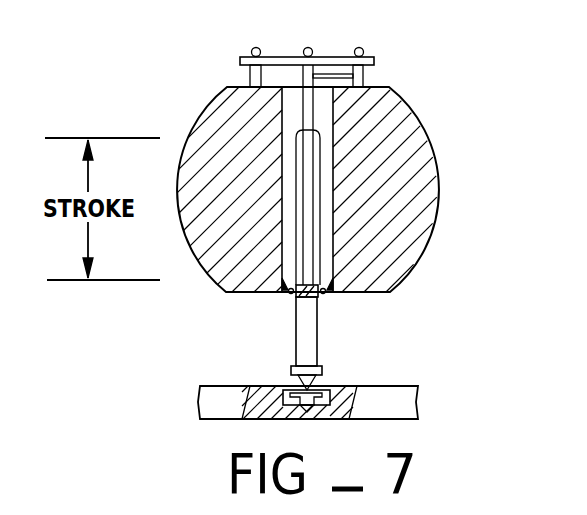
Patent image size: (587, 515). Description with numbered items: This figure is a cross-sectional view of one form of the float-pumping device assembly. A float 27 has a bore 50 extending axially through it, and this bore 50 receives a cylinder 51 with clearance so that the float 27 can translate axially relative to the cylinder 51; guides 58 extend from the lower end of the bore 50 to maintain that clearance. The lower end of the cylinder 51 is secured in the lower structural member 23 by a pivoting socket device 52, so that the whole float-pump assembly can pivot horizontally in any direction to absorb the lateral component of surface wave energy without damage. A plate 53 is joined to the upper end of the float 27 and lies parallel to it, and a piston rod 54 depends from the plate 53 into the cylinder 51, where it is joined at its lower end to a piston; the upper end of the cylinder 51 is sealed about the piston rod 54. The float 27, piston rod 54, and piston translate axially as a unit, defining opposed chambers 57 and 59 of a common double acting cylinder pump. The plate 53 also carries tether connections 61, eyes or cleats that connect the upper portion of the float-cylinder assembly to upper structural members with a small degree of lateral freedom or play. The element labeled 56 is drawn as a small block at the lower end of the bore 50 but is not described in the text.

The lower structural member 23 is at (220, 405).
The float 27 is at (438, 175).
The bore 50 is at (322, 117).
The cylinder 51 is at (319, 352).
The pivoting socket device 52 is at (283, 388).
The plate 53 is at (240, 60).
The piston rod 54 is at (363, 77).
The block 56 is at (314, 298).
The chamber 57 is at (303, 328).
The guides 58 is at (324, 293).
The chamber 59 is at (319, 210).
The tether connections 61 is at (305, 48).